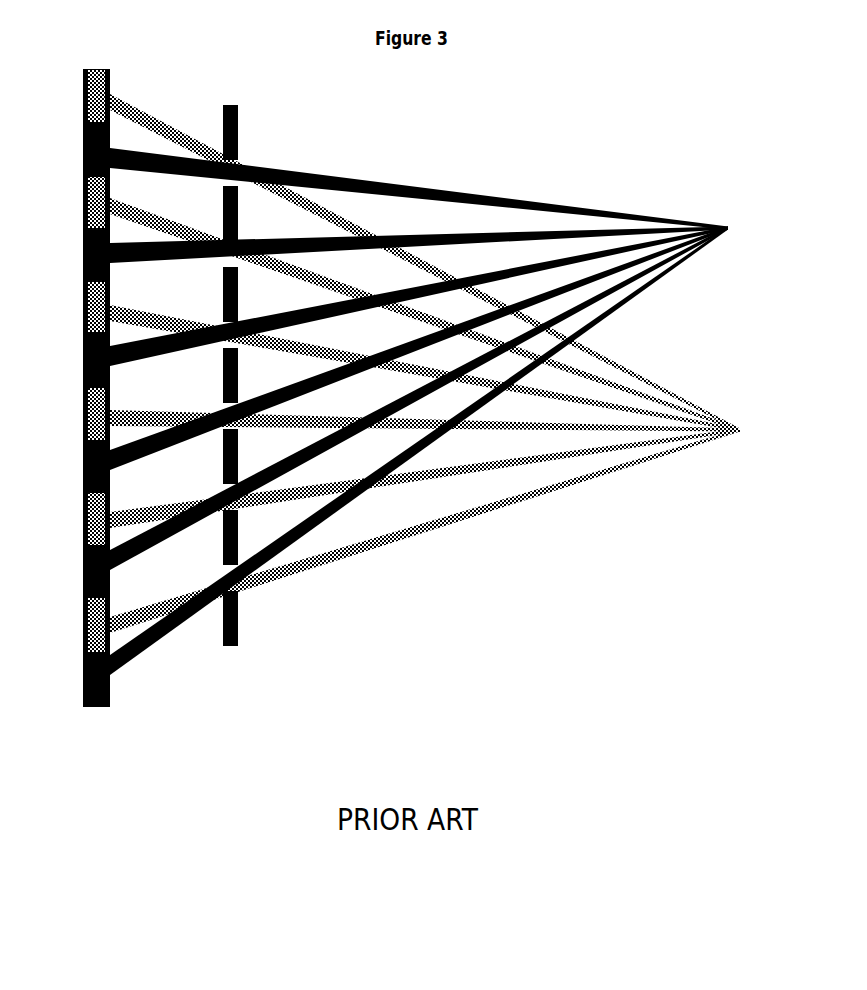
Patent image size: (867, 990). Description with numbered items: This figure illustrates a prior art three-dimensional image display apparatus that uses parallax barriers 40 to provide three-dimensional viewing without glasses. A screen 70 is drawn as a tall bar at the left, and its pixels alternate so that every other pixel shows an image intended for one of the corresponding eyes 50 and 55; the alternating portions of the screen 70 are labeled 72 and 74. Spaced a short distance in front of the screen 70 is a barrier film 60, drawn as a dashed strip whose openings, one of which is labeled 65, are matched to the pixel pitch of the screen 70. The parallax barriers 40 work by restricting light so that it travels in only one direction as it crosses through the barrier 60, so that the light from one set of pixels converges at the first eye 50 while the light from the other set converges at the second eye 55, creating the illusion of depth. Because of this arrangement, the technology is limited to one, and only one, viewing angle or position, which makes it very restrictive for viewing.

The parallax barrier 40 is at (714, 564).
The eye 50 is at (436, 411).
The eye 55 is at (439, 363).
The barrier film 60 is at (240, 352).
The aperture opening 65 is at (235, 585).
The screen 70 is at (94, 398).
The opaque region 72 is at (83, 143).
The transparent region 74 is at (95, 202).